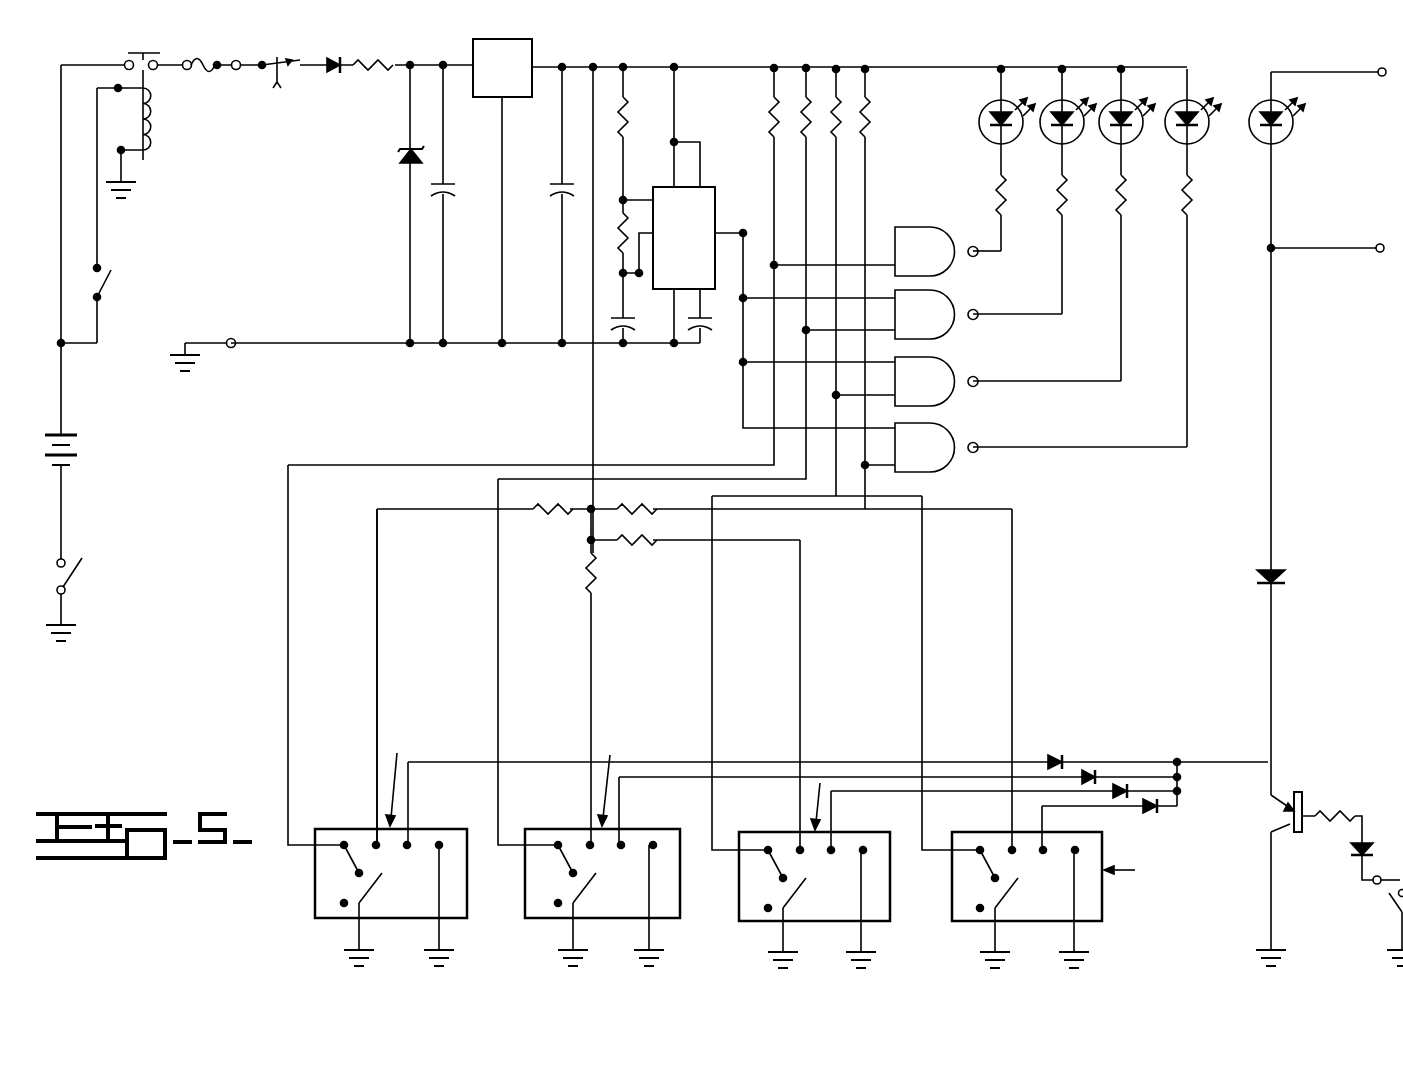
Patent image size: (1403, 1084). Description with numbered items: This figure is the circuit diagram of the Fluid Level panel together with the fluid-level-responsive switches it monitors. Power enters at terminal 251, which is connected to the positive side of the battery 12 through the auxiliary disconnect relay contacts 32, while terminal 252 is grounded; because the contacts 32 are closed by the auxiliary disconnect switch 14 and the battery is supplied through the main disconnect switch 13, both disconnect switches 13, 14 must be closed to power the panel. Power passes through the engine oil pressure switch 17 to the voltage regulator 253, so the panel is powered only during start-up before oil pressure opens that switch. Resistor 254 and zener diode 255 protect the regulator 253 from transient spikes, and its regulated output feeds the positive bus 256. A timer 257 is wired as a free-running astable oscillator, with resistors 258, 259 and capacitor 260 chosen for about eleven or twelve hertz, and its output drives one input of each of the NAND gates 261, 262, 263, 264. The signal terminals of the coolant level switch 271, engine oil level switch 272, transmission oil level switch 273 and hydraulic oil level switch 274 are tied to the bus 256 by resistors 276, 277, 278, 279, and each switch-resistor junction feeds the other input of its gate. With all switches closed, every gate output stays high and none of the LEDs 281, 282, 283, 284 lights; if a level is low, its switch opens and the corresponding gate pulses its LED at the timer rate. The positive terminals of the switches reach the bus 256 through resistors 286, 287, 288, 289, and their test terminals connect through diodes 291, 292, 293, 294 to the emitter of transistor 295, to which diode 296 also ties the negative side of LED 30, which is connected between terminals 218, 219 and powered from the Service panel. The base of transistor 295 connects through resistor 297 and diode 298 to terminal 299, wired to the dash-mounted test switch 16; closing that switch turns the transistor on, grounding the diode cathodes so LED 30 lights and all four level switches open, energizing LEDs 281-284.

The relay contacts 32 is at (127, 53).
The auxiliary disconnect switch 14 is at (111, 276).
The battery 12 is at (72, 456).
The main disconnect switch 13 is at (77, 572).
The terminal 251 is at (235, 60).
The engine oil pressure switch 17 is at (279, 58).
The resistor 254 is at (389, 60).
The zener diode 255 is at (400, 160).
The terminal 252 is at (236, 340).
The voltage regulator 253 is at (536, 47).
The resistor 258 is at (627, 115).
The resistor 259 is at (622, 228).
The capacitor 260 is at (628, 346).
The timer 257 is at (738, 170).
The resistor 276 is at (771, 122).
The resistor 277 is at (803, 94).
The resistor 278 is at (839, 94).
The resistor 279 is at (868, 112).
The NAND gate 261 is at (948, 251).
The NAND gate 262 is at (978, 314).
The NAND gate 263 is at (1008, 381).
The NAND gate 264 is at (1041, 447).
The positive bus 256 is at (948, 68).
The LED 281 is at (979, 141).
The LED 282 is at (1050, 146).
The LED 283 is at (1108, 147).
The LED 284 is at (1175, 147).
The LED 30 is at (1289, 141).
The terminal 218 is at (1380, 76).
The terminal 219 is at (1378, 252).
The diode 296 is at (1262, 572).
The resistor 286 is at (560, 518).
The resistor 287 is at (586, 575).
The resistor 288 is at (630, 548).
The resistor 289 is at (626, 512).
The coolant level switch 271 is at (378, 888).
The engine oil level switch 272 is at (590, 888).
The transmission oil level switch 273 is at (800, 891).
The hydraulic oil level switch 274 is at (1012, 891).
The diode 291 is at (1056, 755).
The diode 292 is at (1088, 770).
The diode 293 is at (1116, 783).
The diode 294 is at (1152, 812).
The transistor 295 is at (1290, 813).
The resistor 297 is at (1345, 776).
The diode 298 is at (1350, 851).
The terminal 299 is at (1375, 885).
The test switch 16 is at (1394, 903).